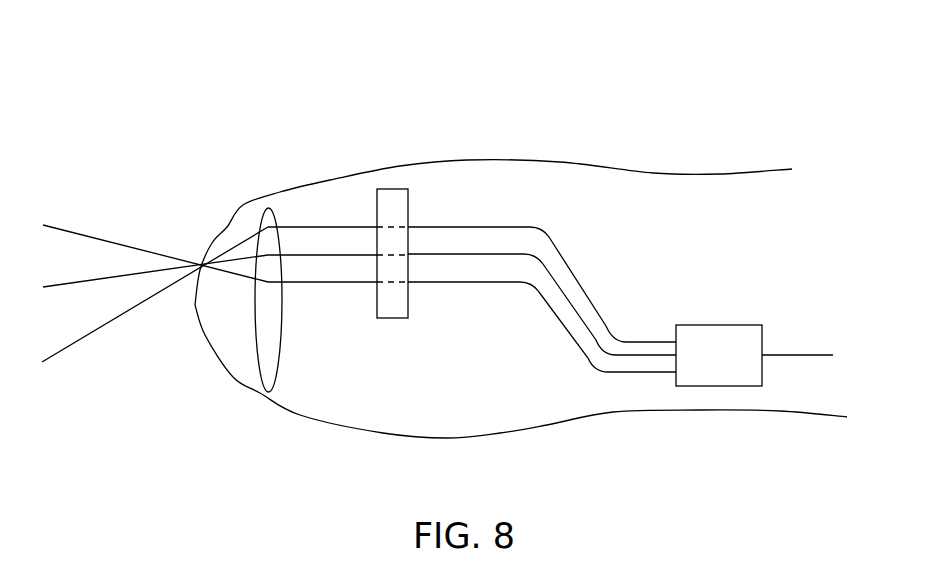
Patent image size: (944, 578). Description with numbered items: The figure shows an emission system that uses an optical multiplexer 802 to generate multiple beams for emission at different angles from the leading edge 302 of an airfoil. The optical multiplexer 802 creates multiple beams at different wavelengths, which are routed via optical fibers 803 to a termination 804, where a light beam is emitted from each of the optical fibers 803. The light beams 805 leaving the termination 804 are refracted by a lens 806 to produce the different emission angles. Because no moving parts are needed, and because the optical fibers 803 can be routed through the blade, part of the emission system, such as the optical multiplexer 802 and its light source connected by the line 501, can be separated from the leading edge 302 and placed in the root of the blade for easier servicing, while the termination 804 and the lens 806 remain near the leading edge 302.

The leading edge 302 is at (229, 225).
The lens 806 is at (257, 367).
The light beams 805 is at (313, 216).
The termination 804 is at (395, 189).
The optical fibers 803 is at (570, 245).
The optical multiplexer 802 is at (697, 325).
The output signal line 501 is at (797, 353).